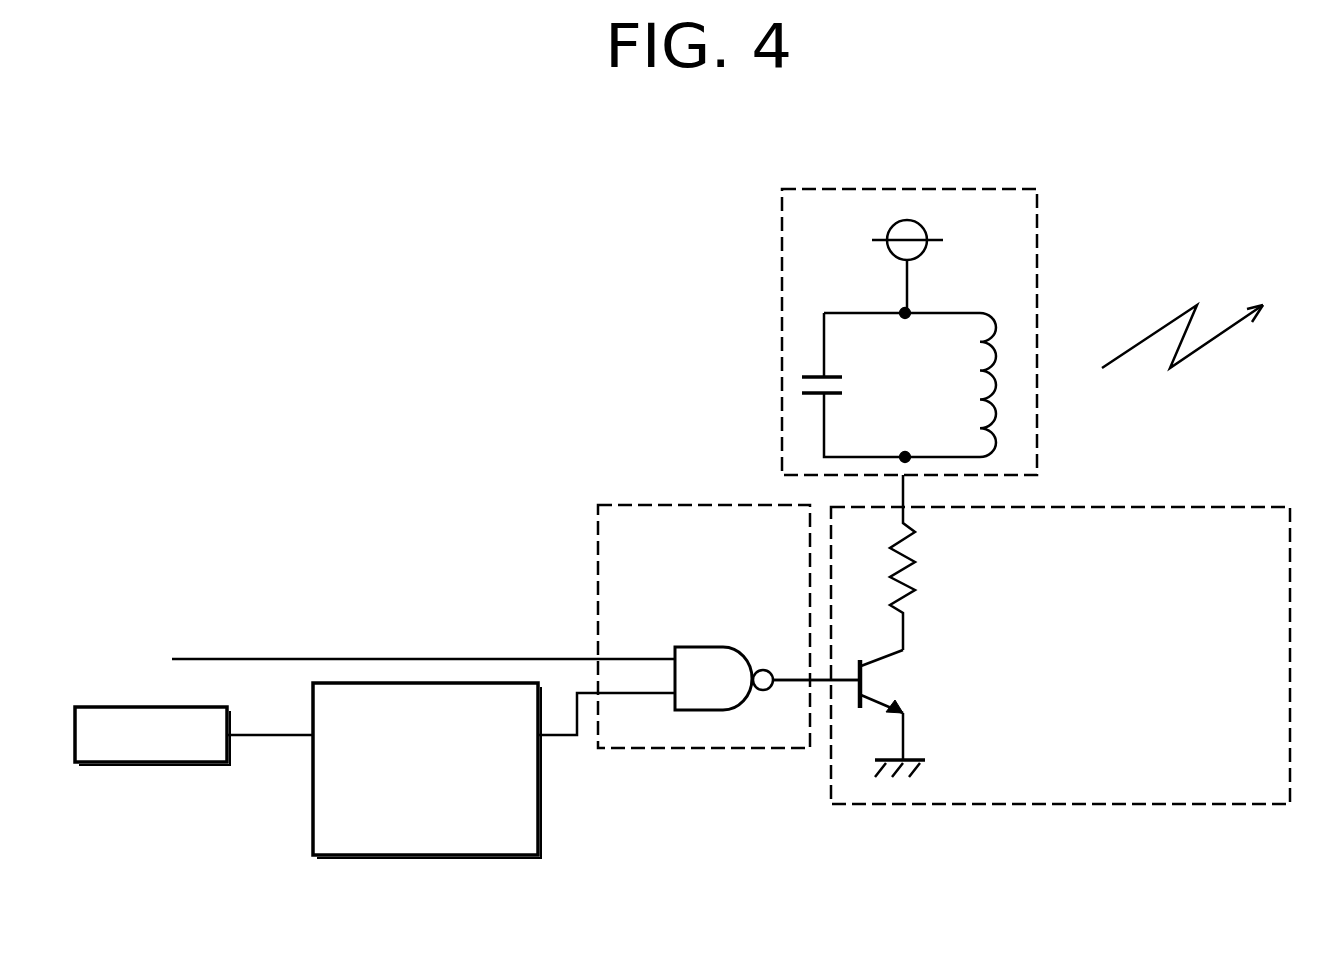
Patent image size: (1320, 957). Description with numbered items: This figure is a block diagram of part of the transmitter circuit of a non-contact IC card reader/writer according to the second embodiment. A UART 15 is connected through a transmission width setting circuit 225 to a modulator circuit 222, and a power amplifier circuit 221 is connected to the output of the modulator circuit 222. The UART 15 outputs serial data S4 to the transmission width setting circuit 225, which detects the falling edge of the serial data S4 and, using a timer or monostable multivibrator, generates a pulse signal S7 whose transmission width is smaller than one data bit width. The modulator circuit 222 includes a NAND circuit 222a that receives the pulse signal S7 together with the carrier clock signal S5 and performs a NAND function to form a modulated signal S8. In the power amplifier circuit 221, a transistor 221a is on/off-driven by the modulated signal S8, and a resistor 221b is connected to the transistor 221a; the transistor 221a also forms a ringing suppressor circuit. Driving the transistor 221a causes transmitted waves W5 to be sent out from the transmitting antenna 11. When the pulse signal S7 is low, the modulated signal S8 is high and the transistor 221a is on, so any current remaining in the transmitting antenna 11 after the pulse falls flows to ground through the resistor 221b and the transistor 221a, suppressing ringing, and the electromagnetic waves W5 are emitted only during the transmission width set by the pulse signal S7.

The transmitting antenna 11 is at (1037, 252).
The transmitted waves W5 is at (1147, 332).
The UART 15 is at (127, 762).
The serial data S4 is at (247, 735).
The carrier clock signal S5 is at (401, 660).
The pulse signal S7 is at (579, 722).
The modulated signal S8 is at (818, 680).
The transmission width setting circuit 225 is at (538, 813).
The modulator circuit 222 is at (700, 748).
The NAND circuit 222a is at (675, 655).
The power amplifier circuit 221 is at (1158, 805).
The transistor 221a is at (878, 693).
The resistor 221b is at (918, 590).